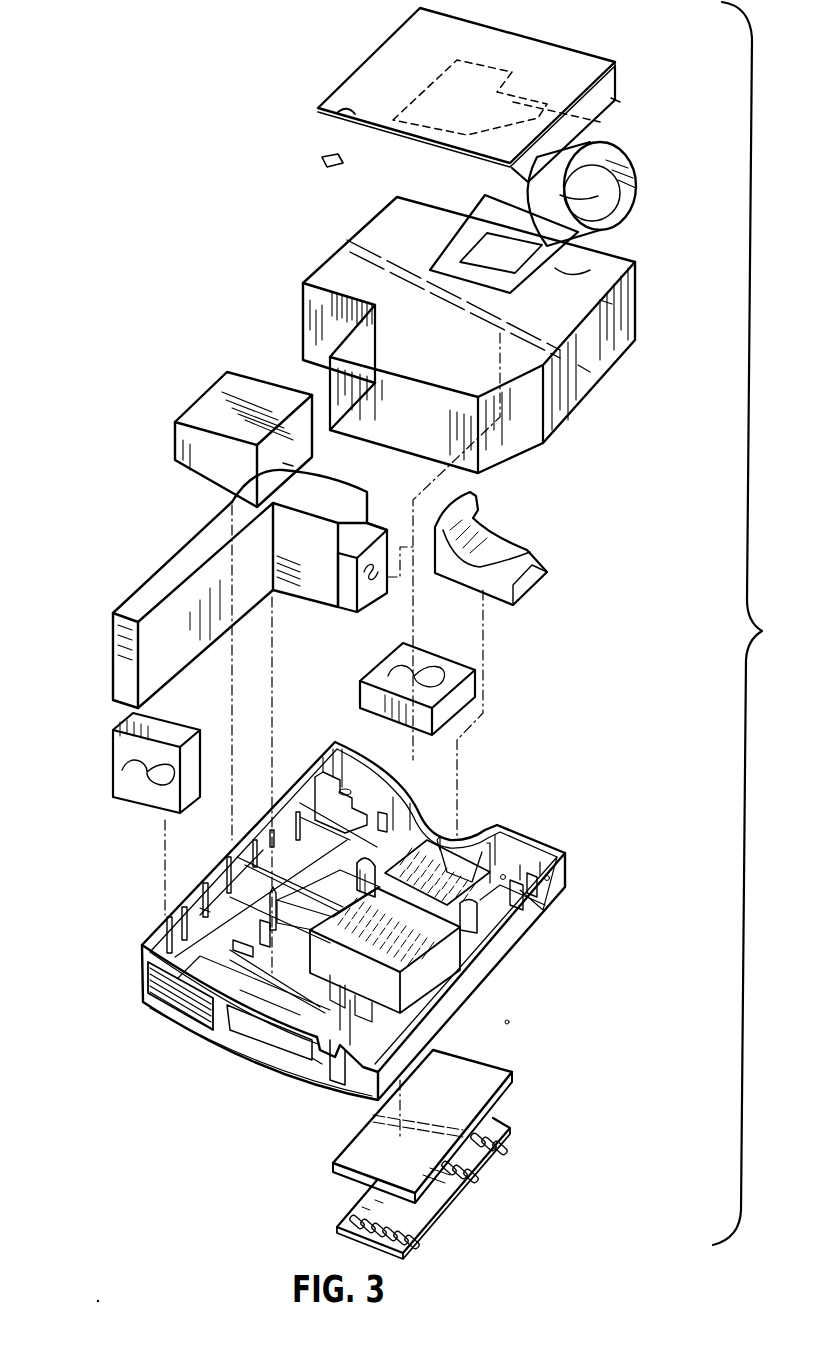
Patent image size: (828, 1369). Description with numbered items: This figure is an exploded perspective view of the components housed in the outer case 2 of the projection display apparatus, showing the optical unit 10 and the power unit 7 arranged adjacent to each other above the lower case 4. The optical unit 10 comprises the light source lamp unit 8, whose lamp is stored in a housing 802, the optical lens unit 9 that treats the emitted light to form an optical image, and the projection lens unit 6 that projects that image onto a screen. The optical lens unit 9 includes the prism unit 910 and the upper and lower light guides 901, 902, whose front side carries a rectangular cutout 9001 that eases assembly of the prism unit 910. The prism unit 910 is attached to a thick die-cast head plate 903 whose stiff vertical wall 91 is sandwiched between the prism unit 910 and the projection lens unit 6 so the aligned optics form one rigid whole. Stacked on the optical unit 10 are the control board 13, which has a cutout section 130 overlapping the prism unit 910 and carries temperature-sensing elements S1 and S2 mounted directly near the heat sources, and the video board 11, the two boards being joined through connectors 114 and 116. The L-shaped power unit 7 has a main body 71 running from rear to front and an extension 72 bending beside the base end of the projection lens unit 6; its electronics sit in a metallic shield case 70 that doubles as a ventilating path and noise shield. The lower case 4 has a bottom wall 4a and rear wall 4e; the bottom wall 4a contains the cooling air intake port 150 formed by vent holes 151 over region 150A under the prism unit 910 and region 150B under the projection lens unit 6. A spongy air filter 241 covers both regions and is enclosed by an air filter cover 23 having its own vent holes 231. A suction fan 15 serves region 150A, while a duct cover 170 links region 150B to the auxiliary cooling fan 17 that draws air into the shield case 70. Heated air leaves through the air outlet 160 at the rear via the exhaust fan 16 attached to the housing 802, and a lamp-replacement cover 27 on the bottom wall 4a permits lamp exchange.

The video board 11 is at (447, 83).
The temperature-sensing element S1 is at (462, 133).
The temperature-sensing element S2 is at (600, 122).
The connector 114 is at (343, 108).
The connector 116 is at (324, 157).
The control board 13 is at (602, 105).
The cutout section 130 is at (615, 100).
The projection lens unit 6 is at (612, 170).
The head plate 903 is at (597, 194).
The optical lens unit 9 is at (330, 262).
The optical unit 10 is at (496, 454).
The vertical wall 91 is at (558, 220).
The prism unit 910 is at (517, 245).
The rectangular cutout 9001 is at (555, 270).
The upper light guide 901 is at (608, 305).
The lower light guide 902 is at (583, 368).
The light source lamp unit 8 is at (202, 413).
The housing 802 is at (185, 417).
The power unit 7 is at (231, 585).
The shield case 70 is at (250, 585).
The main body 71 is at (207, 550).
The extension 72 is at (233, 497).
The auxiliary cooling fan 17 is at (347, 600).
The duct cover 170 is at (527, 570).
The suction fan 15 is at (452, 703).
The exhaust fan 16 is at (113, 768).
The outer case 2 is at (369, 943).
The lower case 4 is at (369, 943).
The bottom wall 4a is at (240, 918).
The rear wall 4e is at (317, 1058).
The air outlet 160 is at (150, 1015).
The lamp-replacement cover 27 is at (267, 993).
The cooling air intake port 150 is at (445, 937).
The region under the prism unit 150A is at (330, 1078).
The region under the base end of the projection lens unit 150B is at (460, 838).
The vent holes 151 is at (480, 928).
The spongy air filter 241 is at (473, 1083).
The air filter cover 23 is at (432, 1190).
The vent holes 231 is at (423, 1232).